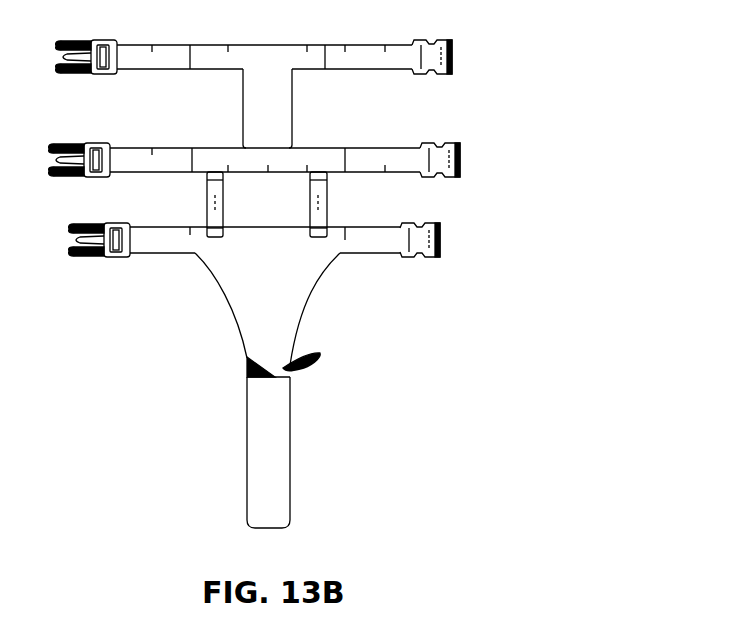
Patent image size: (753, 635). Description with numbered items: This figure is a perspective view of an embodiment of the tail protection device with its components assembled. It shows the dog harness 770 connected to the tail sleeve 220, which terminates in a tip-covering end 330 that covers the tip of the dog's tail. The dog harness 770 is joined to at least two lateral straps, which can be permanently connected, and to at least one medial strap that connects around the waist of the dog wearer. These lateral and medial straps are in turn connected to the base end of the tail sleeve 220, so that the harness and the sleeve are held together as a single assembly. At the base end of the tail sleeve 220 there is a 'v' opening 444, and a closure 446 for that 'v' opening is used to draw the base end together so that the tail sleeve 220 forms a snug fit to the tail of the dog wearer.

The dog harness 770 is at (467, 40).
The closure for 'v' opening in base end of tail sleeve 446 is at (318, 356).
The 'v' opening in base end of tail sleeve 444 is at (268, 365).
The tail sleeve 220 is at (207, 325).
The tip-covering end 330 is at (289, 505).